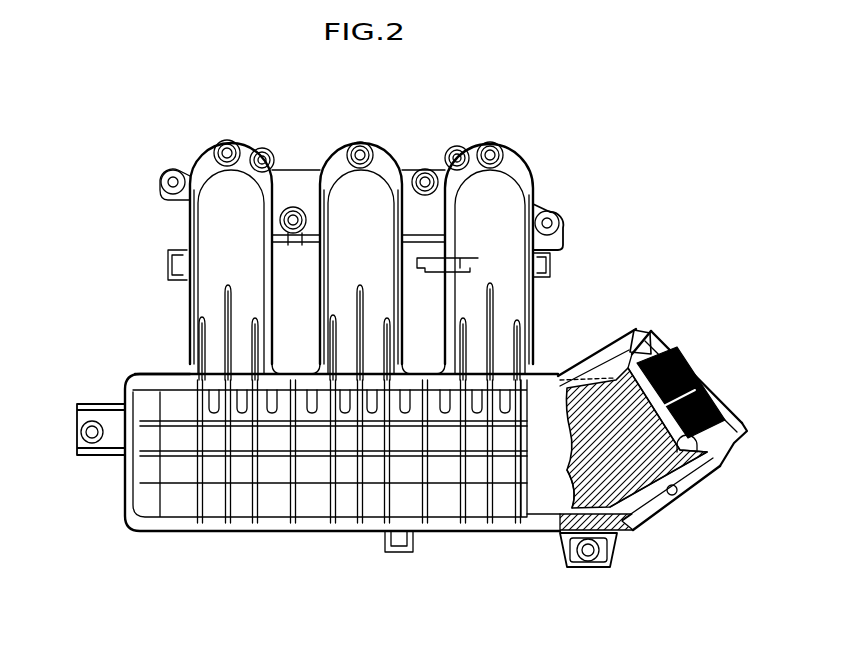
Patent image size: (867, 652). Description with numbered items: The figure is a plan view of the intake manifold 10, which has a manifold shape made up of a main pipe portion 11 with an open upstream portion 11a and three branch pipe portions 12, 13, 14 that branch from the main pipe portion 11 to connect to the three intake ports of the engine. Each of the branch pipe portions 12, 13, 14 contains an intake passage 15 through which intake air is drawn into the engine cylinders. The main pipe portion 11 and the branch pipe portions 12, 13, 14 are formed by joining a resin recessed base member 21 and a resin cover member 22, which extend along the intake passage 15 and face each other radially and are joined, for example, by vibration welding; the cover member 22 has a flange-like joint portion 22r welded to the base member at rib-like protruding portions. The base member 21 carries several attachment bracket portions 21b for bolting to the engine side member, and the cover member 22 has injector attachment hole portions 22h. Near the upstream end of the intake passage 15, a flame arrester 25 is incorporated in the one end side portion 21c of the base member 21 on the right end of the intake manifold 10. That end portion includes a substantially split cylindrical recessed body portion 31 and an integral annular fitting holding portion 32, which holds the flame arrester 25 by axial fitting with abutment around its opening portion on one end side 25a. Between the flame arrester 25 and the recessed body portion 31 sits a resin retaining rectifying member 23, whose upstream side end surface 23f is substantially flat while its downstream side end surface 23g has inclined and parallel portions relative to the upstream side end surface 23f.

The intake manifold 10 is at (617, 237).
The main pipe portion 11 is at (445, 512).
The open upstream portion 11a is at (665, 320).
The branch pipe portion 12 is at (518, 293).
The branch pipe portion 13 is at (377, 185).
The branch pipe portion 14 is at (202, 233).
The intake passage 15 is at (560, 520).
The base member 21 is at (670, 512).
The attachment bracket portion 21b is at (542, 205).
The one end side portion 21c is at (729, 443).
The cover member 22 is at (268, 505).
The injector attachment hole portion 22h is at (229, 147).
The flange-like joint portion 22r is at (166, 376).
The retaining rectifying member 23 is at (572, 440).
The upstream side end surface 23f is at (700, 455).
The downstream side end surface 23g is at (575, 466).
The flame arrester 25 is at (713, 398).
The opening portion on one end side 25a is at (693, 380).
The recessed body portion 31 is at (588, 360).
The fitting holding portion 32 is at (640, 327).